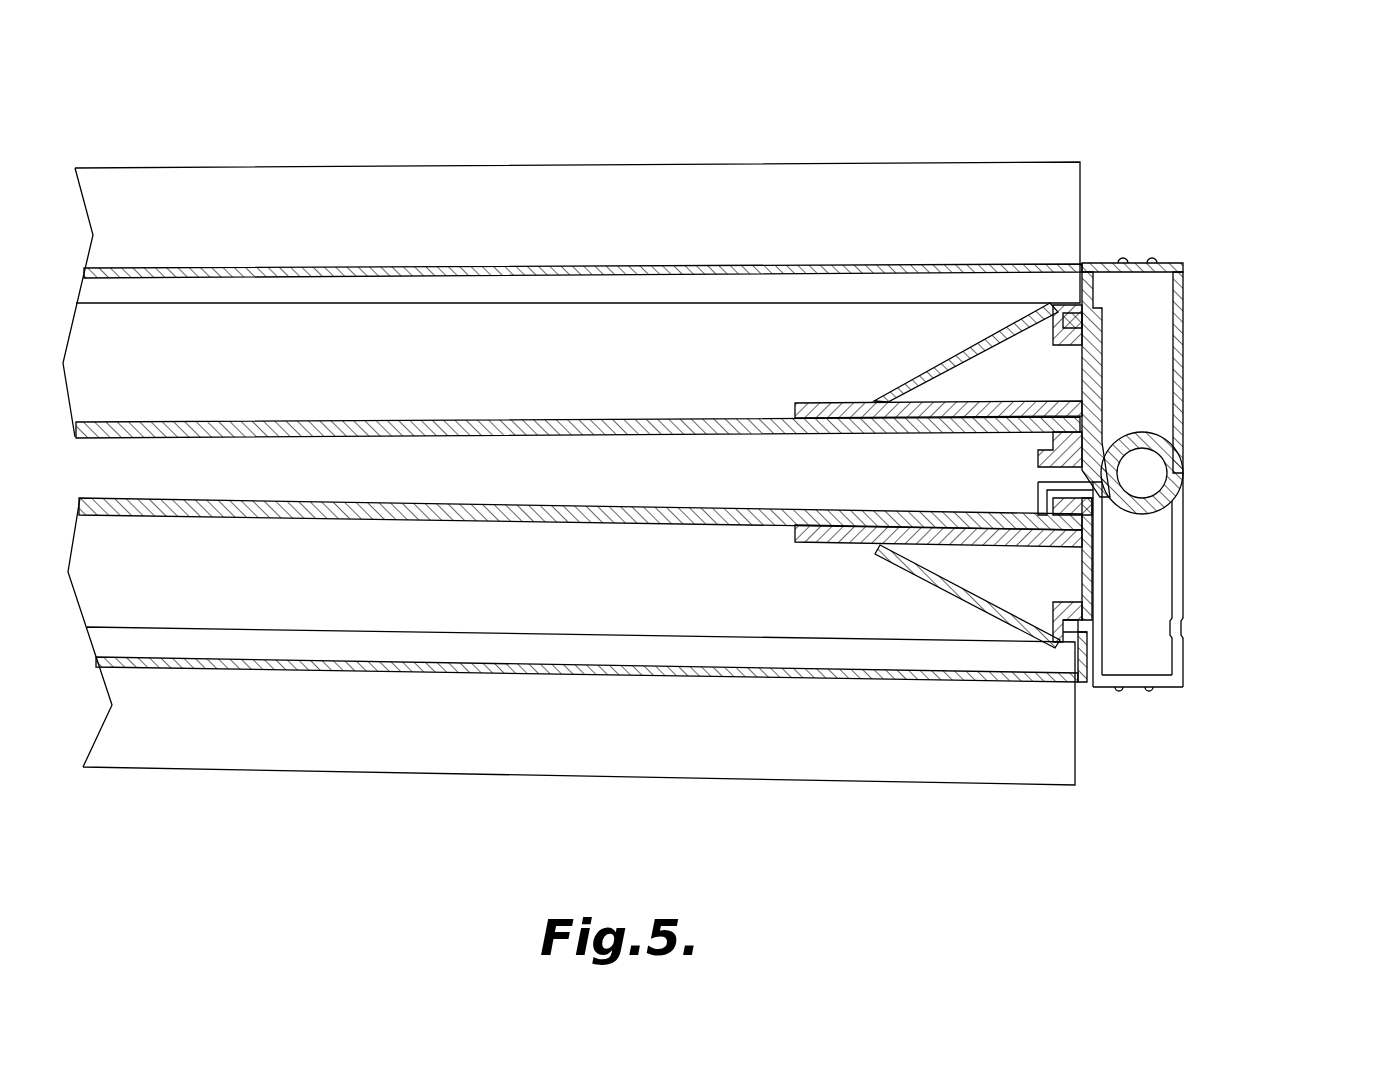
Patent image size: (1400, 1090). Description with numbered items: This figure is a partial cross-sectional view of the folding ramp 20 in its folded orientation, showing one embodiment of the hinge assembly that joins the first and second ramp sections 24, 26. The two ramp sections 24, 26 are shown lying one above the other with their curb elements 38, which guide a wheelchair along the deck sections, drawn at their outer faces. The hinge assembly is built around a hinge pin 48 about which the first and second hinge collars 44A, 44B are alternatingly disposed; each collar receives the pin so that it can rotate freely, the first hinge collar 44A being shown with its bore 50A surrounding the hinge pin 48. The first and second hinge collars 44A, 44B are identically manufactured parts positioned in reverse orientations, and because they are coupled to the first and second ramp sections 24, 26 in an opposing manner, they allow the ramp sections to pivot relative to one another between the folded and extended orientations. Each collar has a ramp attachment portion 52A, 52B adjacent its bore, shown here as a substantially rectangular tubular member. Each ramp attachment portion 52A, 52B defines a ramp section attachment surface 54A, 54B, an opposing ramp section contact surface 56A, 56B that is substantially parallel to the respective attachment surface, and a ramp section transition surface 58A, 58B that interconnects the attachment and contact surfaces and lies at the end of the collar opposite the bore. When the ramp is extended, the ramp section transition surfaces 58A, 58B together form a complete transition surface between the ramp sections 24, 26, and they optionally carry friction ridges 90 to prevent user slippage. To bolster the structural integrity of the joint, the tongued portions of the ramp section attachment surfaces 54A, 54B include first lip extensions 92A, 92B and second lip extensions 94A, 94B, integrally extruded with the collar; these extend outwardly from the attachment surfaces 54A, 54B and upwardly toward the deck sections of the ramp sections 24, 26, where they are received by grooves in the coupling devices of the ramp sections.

The folding ramp 20 is at (1316, 118).
The curb element 38 is at (465, 166).
The first ramp section 24 is at (822, 266).
The second ramp section 26 is at (845, 683).
The second lip extension 94A is at (1030, 442).
The second lip extension 94B is at (1037, 500).
The ramp section attachment surface 54A is at (1088, 362).
The ramp section attachment surface 54B is at (1087, 570).
The first lip extension 92A is at (1070, 306).
The first lip extension 92B is at (1074, 630).
The friction ridge 90 is at (1152, 262).
The ramp section transition surface 58A is at (1184, 263).
The ramp section transition surface 58B is at (1178, 688).
The first hinge collar 44A is at (1211, 359).
The second hinge collar 44B is at (1207, 604).
The ramp attachment portion 52A is at (1200, 318).
The ramp attachment portion 52B is at (1198, 583).
The opposing ramp section contact surface 56A is at (1184, 364).
The opposing ramp section contact surface 56B is at (1184, 563).
The hinge pin 48 is at (1150, 468).
The bore 50A is at (1184, 497).